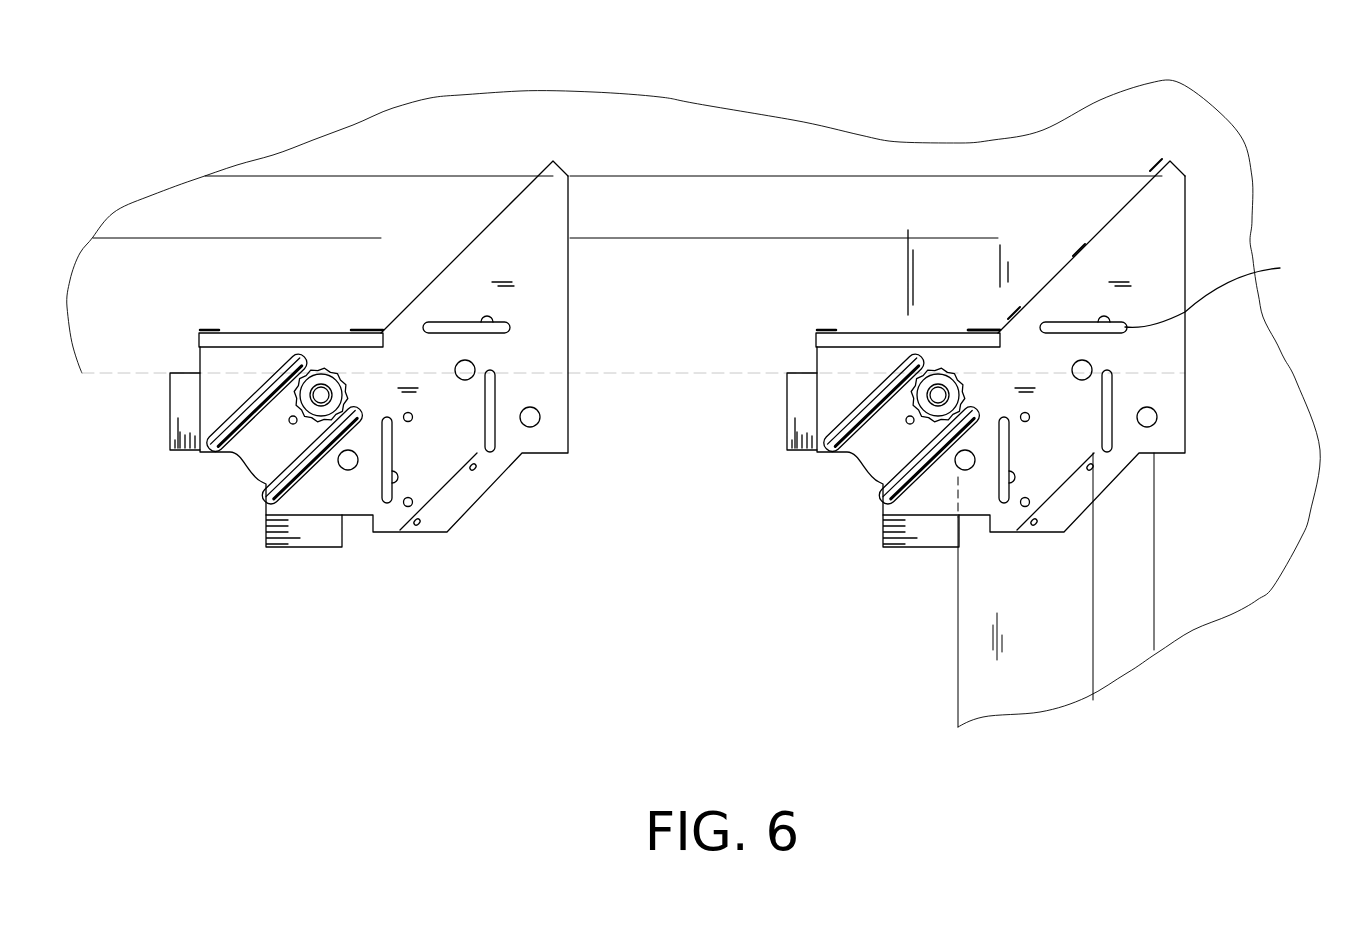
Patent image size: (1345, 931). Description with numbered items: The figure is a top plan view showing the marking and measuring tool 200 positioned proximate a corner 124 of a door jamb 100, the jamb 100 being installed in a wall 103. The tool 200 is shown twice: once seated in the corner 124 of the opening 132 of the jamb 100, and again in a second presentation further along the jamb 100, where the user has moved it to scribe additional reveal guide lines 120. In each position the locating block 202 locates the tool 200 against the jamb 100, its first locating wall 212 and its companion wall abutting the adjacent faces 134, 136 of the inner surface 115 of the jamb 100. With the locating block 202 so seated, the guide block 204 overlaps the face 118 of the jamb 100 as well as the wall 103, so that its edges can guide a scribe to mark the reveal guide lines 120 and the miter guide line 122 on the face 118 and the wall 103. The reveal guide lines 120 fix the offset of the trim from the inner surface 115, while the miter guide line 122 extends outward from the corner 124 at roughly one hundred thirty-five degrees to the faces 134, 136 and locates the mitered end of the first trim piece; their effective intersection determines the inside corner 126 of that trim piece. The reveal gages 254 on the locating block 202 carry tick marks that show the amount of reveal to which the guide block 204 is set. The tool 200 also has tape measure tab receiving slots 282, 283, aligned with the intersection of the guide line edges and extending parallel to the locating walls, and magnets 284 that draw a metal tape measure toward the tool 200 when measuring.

The jamb 100 is at (1058, 677).
The wall 103 is at (1237, 487).
The inner surface 115 is at (960, 657).
The face 118 is at (958, 692).
The reveal guide lines 120 is at (367, 330).
The miter guide line 122 is at (1160, 165).
The corner 124 is at (957, 378).
The inside corner 126 is at (997, 328).
The opening 132 is at (668, 573).
The inner surface face 134 is at (683, 380).
The inner surface face 136 is at (958, 582).
The marking and measuring tool 200 is at (1073, 136).
The locating block 202 is at (928, 545).
The guide block 204 is at (1175, 365).
The first locating wall 212 is at (790, 365).
The reveal gages 254 is at (720, 396).
The tape measure tab receiving slot 282 is at (1224, 290).
The tape measure tab receiving slot 283 is at (1012, 437).
The magnets 284 is at (970, 468).